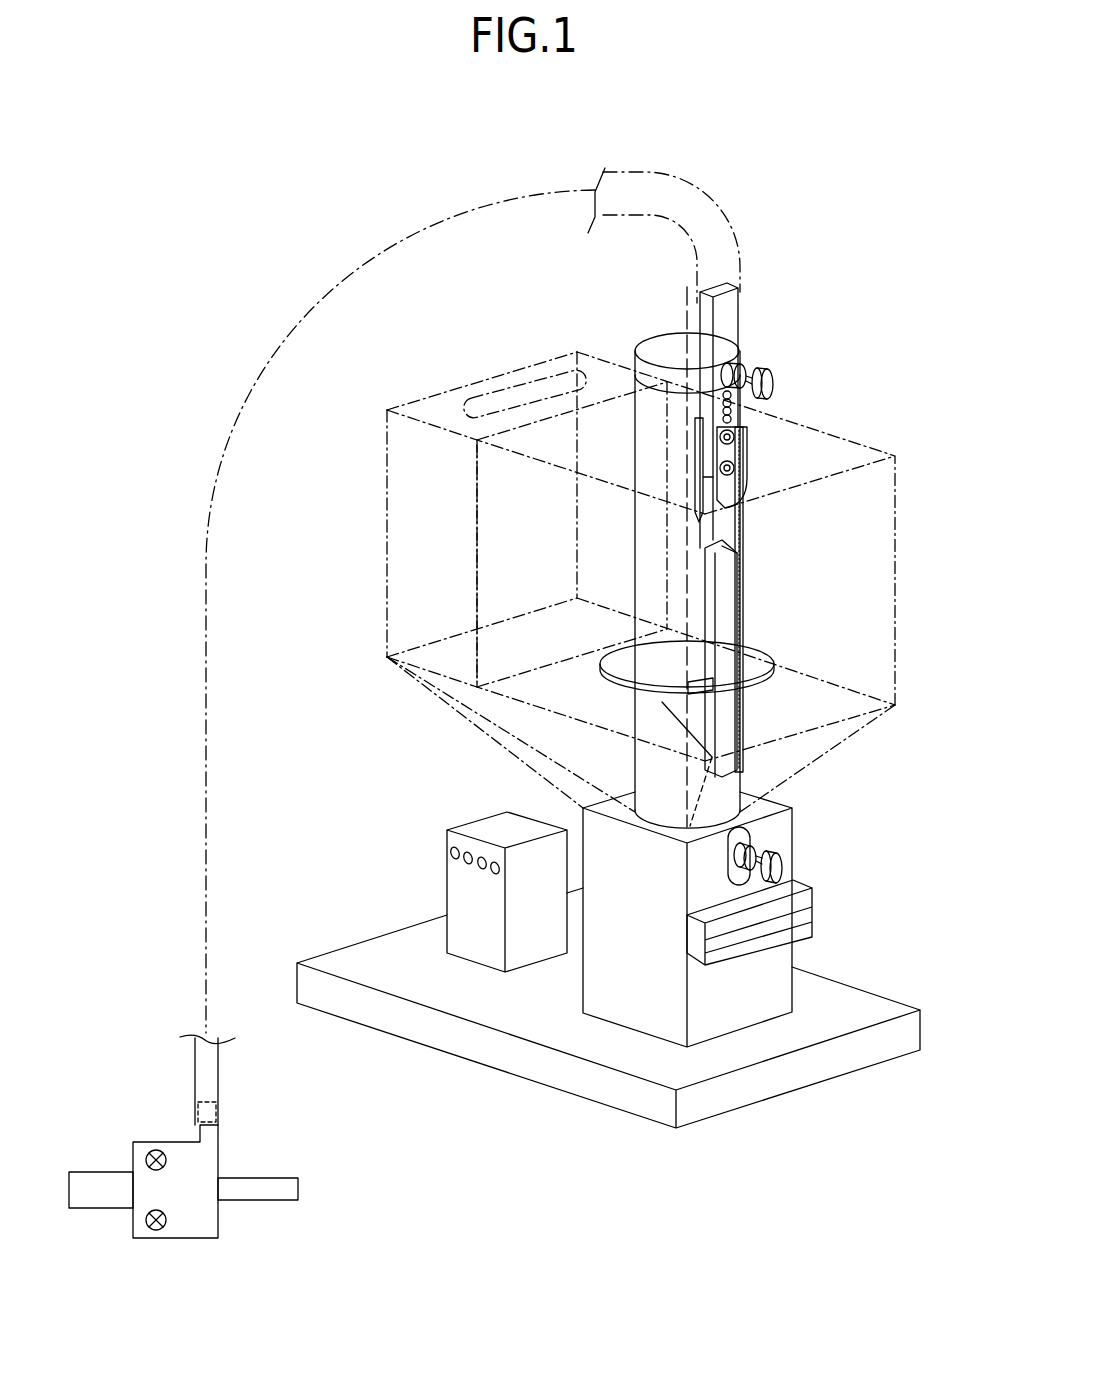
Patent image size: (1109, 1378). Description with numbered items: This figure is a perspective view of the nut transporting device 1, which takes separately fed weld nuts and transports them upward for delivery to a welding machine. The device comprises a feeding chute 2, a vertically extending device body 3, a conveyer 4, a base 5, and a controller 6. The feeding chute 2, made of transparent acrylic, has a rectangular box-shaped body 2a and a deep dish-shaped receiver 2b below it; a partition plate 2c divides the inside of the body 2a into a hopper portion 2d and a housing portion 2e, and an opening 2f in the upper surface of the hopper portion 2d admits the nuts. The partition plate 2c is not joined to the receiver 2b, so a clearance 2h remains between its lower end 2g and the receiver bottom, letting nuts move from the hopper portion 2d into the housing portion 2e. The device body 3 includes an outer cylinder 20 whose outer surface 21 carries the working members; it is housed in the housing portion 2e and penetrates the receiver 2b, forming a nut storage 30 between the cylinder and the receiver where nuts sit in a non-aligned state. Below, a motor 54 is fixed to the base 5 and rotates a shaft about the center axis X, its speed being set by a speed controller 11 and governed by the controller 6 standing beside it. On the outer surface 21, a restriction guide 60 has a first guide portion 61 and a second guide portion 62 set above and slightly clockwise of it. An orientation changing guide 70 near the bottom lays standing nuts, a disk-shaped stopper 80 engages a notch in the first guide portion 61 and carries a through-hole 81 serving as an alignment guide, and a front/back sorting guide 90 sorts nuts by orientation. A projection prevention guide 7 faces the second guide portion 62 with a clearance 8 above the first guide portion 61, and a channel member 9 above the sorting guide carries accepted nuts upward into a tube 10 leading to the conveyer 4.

The nut transporting device 1 is at (781, 335).
The feeding chute 2 is at (643, 548).
The body 2a is at (420, 400).
The receiver 2b is at (402, 690).
The partition plate 2c is at (478, 528).
The hopper portion 2d is at (435, 408).
The housing portion 2e is at (897, 545).
The opening 2f is at (555, 385).
The lower end 2g is at (477, 692).
The clearance 2h is at (492, 700).
The device body 3 is at (660, 353).
The conveyer 4 is at (177, 1157).
The base 5 is at (835, 998).
The controller 6 is at (450, 887).
The projection prevention guide 7 is at (697, 489).
The clearance 8 is at (715, 532).
The channel member 9 is at (737, 390).
The tube 10 is at (687, 192).
The speed controller 11 is at (785, 862).
The outer cylinder 20 is at (730, 781).
The outer surface 21 is at (640, 585).
The nut storage 30 is at (684, 977).
The motor 54 is at (600, 983).
The restriction guide 60 is at (726, 602).
The first guide portion 61 is at (730, 580).
The second guide portion 62 is at (734, 528).
The orientation changing guide 70 is at (680, 708).
The stopper 80 is at (607, 671).
The through-hole 81 is at (700, 684).
The front/back sorting guide 90 is at (747, 485).
The center axis X is at (687, 302).